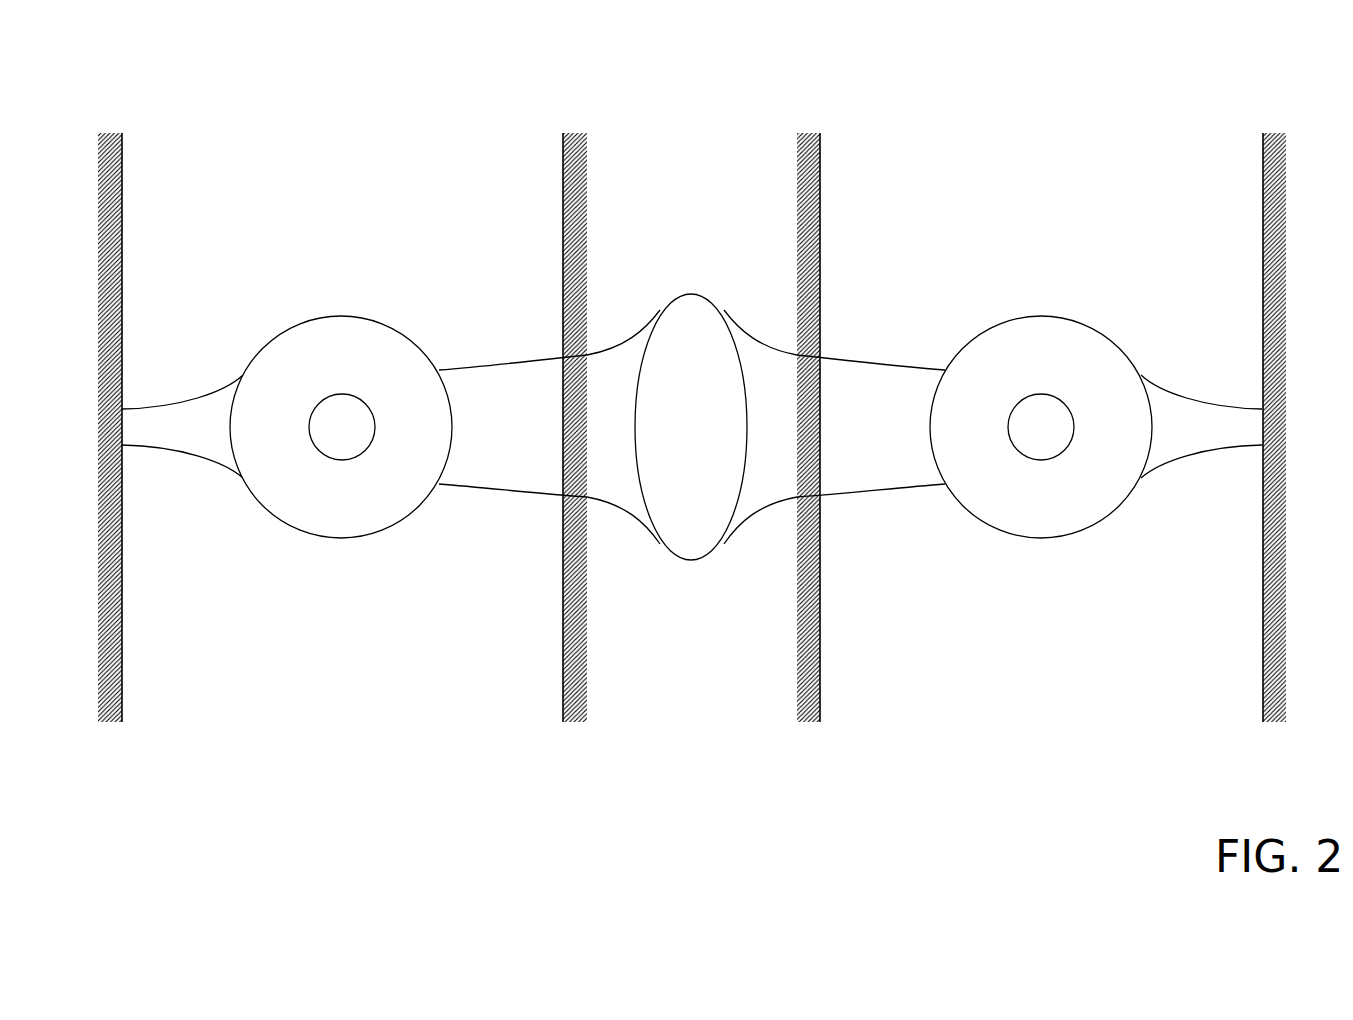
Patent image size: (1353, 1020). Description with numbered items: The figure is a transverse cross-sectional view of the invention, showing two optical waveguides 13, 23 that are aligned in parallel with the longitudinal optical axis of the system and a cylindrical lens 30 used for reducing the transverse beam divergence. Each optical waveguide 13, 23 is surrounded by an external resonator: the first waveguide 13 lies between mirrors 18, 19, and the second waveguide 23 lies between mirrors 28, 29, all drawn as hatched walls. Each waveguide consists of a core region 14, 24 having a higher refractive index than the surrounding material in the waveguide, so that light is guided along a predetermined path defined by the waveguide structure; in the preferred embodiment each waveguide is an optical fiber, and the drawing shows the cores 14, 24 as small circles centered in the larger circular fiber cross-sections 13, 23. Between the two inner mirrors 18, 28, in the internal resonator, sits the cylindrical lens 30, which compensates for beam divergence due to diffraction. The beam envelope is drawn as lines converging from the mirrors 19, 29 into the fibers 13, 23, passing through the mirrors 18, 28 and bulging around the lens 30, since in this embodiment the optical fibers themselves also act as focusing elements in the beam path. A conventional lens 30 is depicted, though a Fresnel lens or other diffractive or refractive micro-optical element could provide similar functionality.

The optical waveguide 13 is at (331, 318).
The core region 14 is at (341, 393).
The mirror 18 is at (561, 136).
The mirror 19 is at (124, 138).
The optical waveguide 23 is at (1019, 318).
The core region 24 is at (1030, 393).
The mirror 28 is at (823, 138).
The mirror 29 is at (1261, 136).
The cylindrical lens 30 is at (686, 288).